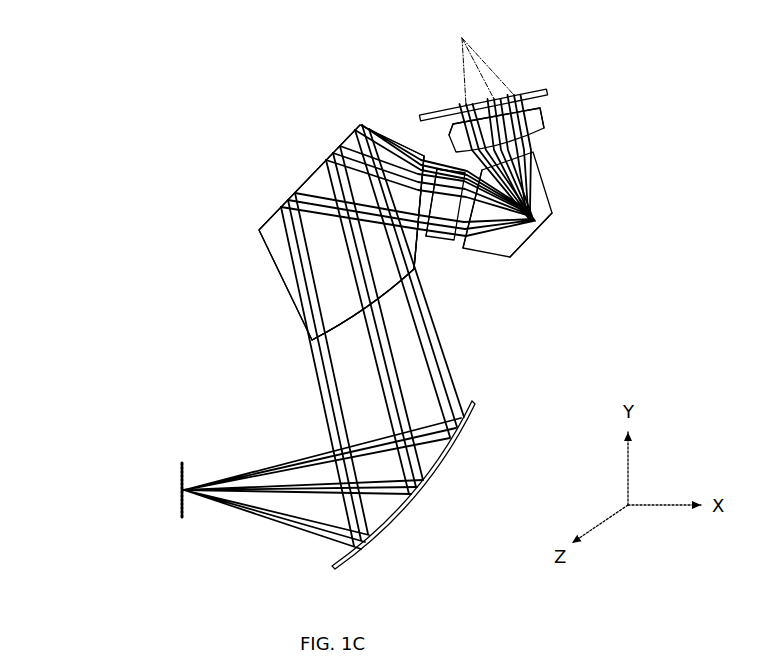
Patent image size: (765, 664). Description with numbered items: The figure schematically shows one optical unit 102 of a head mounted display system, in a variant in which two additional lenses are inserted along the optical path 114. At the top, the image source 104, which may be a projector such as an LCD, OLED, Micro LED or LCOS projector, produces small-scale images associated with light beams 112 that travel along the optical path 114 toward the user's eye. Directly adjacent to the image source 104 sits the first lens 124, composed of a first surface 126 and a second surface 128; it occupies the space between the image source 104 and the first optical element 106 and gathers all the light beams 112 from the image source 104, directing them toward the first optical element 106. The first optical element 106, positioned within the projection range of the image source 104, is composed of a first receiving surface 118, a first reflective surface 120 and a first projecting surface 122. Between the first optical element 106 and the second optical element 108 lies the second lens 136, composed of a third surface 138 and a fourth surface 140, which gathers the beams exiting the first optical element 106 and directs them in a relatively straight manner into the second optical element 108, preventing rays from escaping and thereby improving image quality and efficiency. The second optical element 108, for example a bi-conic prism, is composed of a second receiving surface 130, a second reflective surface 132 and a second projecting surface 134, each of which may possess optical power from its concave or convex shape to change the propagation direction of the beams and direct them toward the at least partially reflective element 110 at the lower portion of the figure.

The optical unit 102 is at (93, 102).
The image source 104 is at (532, 95).
The first optical element 106 is at (565, 237).
The second optical element 108 is at (255, 175).
The at least partially reflective element 110 is at (438, 463).
The light beams 112 is at (481, 59).
The optical path 114 is at (303, 396).
The first receiving surface 118 is at (537, 155).
The first reflective surface 120 is at (517, 252).
The first projecting surface 122 is at (483, 170).
The first lens 124 is at (548, 108).
The first surface 126 is at (452, 131).
The second surface 128 is at (548, 131).
The second receiving surface 130 is at (416, 262).
The second reflective surface 132 is at (334, 149).
The second projecting surface 134 is at (350, 323).
The second lens 136 is at (433, 162).
The third surface 138 is at (458, 242).
The fourth surface 140 is at (428, 238).